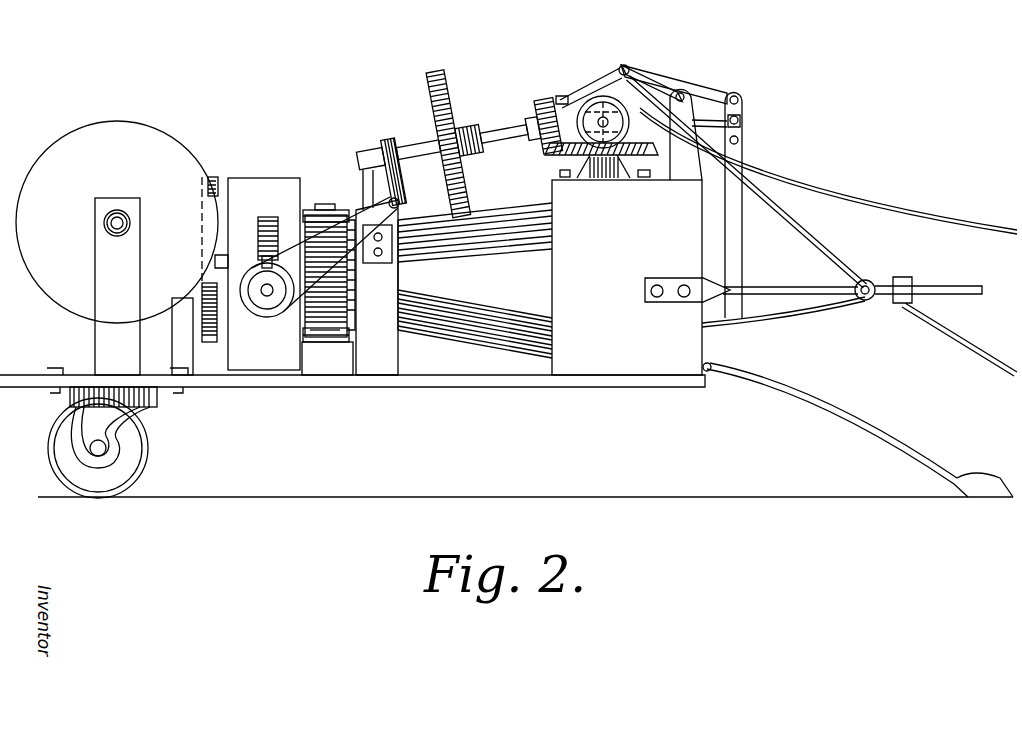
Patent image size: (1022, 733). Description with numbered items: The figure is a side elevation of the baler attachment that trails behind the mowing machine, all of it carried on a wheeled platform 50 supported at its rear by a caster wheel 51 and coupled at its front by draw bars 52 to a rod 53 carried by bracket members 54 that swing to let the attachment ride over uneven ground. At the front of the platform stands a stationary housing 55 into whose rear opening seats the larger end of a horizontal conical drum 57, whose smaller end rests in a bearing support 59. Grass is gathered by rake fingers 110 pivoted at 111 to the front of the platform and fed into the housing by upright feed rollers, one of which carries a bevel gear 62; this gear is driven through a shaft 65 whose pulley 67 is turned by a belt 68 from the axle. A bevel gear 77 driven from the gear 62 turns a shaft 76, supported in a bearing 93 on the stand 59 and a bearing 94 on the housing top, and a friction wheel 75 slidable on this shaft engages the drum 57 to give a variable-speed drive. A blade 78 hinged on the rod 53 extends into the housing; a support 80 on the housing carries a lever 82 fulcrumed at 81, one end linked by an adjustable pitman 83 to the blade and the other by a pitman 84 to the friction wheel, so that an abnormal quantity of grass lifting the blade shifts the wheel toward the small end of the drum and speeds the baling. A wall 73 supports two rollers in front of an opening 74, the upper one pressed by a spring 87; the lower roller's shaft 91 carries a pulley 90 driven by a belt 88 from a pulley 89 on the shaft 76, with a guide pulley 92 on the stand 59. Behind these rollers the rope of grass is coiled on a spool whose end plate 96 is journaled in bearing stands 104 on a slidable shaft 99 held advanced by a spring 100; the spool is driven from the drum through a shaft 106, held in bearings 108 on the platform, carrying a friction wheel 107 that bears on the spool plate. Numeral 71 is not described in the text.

The wheeled platform 50 is at (497, 383).
The caster wheel 51 is at (137, 446).
The draw bars 52 is at (784, 288).
The rod 53 is at (866, 300).
The bracket members 54 is at (950, 286).
The housing 55 is at (627, 277).
The conical drum 57 is at (505, 212).
The bearing support 59 is at (377, 272).
The bevel gear 62 is at (647, 128).
The shaft 65 is at (603, 115).
The pulley 67 is at (604, 150).
The belt 68 is at (825, 195).
The pedestal 71 is at (330, 342).
The wall 73 is at (278, 185).
The opening 74 is at (307, 330).
The friction wheel 75 is at (450, 90).
The shaft 76 is at (418, 167).
The bevel gear 77 is at (546, 100).
The blade 78 is at (763, 322).
The support 80 is at (745, 125).
The fulcrum 81 is at (710, 82).
The lever 82 is at (742, 100).
The pitman 83 is at (745, 165).
The pitman 84 is at (506, 126).
The spring 87 is at (262, 217).
The belt 88 is at (345, 215).
The pulley 89 is at (391, 140).
The pulley 90 is at (262, 300).
The shaft 91 is at (262, 287).
The guide pulley 92 is at (399, 206).
The bearing 93 is at (370, 150).
The bearing 94 is at (562, 96).
The end plate 96 is at (117, 222).
The shaft 99 is at (128, 223).
The spring 100 is at (122, 213).
The bearing stands 104 is at (100, 252).
The shaft 106 is at (213, 250).
The friction wheel 107 is at (212, 177).
The bearings 108 is at (192, 365).
The rake fingers 110 is at (808, 413).
The pivot 111 is at (707, 371).